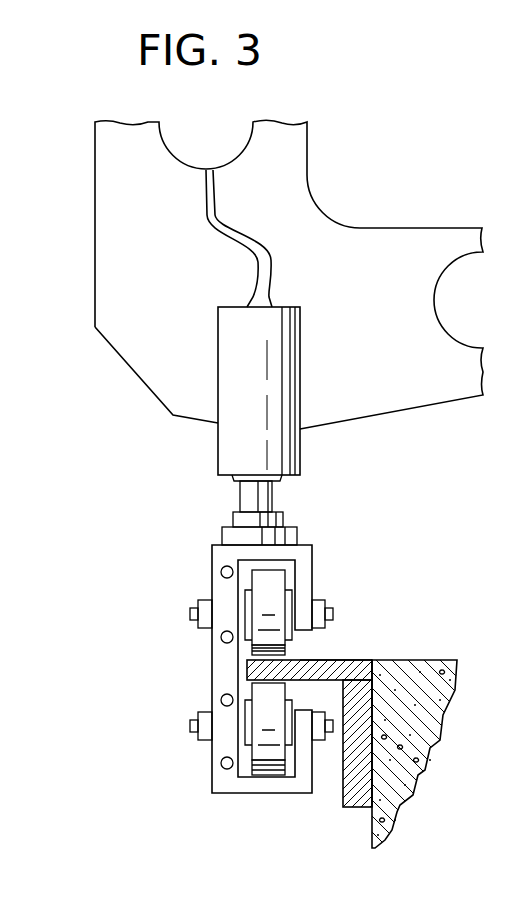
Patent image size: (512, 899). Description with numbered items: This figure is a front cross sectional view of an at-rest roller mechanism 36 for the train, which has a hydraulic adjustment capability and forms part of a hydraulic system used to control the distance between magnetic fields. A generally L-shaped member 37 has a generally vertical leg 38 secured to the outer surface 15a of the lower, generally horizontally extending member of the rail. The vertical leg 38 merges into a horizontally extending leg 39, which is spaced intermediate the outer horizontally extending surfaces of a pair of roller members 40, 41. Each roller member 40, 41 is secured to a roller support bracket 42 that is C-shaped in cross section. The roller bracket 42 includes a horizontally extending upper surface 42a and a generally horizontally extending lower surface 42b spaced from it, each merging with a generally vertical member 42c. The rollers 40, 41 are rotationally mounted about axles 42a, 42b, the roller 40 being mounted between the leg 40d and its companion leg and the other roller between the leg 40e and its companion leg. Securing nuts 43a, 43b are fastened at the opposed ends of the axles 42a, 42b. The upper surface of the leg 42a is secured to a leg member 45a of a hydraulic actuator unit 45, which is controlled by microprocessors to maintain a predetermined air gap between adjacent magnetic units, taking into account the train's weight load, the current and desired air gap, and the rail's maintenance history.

The outer surface 15a is at (372, 832).
The at-rest roller mechanism 36 is at (118, 668).
The L-shaped member 37 is at (372, 655).
The vertical leg 38 is at (345, 785).
The horizontally extending leg 39 is at (340, 660).
The roller member 40 is at (273, 587).
The leg 40d is at (308, 590).
The leg 40e is at (372, 710).
The roller member 41 is at (257, 770).
The roller support bracket 42 is at (254, 668).
The upper surface 42a is at (190, 613).
The lower surface 42b is at (190, 726).
The vertical member 42c is at (212, 668).
The securing nut 43a is at (202, 600).
The securing nut 43b is at (198, 713).
The hydraulic actuator unit 45 is at (218, 452).
The leg member 45a is at (282, 510).